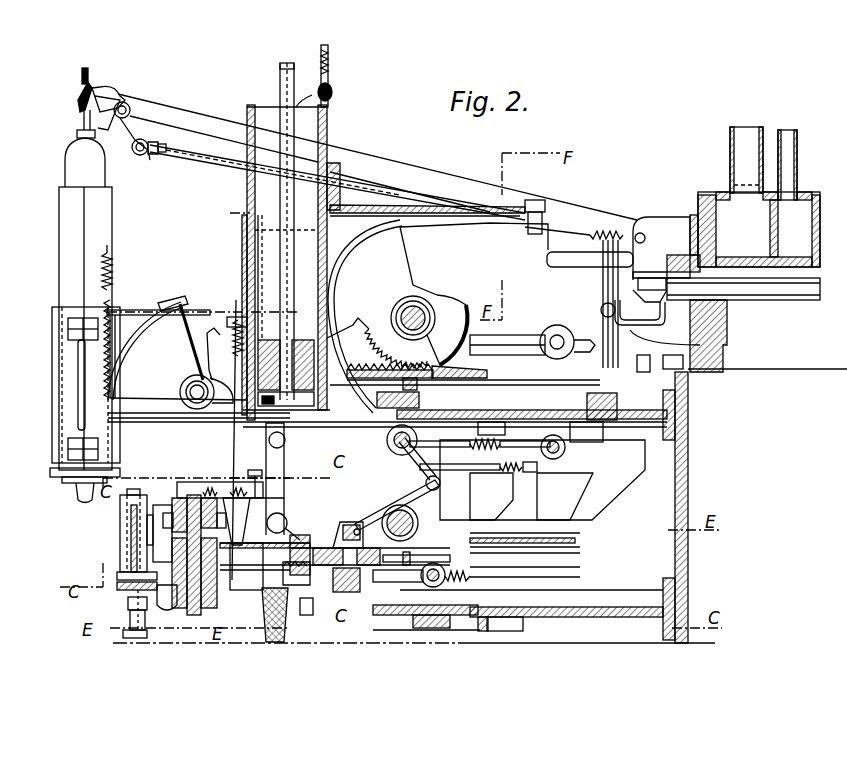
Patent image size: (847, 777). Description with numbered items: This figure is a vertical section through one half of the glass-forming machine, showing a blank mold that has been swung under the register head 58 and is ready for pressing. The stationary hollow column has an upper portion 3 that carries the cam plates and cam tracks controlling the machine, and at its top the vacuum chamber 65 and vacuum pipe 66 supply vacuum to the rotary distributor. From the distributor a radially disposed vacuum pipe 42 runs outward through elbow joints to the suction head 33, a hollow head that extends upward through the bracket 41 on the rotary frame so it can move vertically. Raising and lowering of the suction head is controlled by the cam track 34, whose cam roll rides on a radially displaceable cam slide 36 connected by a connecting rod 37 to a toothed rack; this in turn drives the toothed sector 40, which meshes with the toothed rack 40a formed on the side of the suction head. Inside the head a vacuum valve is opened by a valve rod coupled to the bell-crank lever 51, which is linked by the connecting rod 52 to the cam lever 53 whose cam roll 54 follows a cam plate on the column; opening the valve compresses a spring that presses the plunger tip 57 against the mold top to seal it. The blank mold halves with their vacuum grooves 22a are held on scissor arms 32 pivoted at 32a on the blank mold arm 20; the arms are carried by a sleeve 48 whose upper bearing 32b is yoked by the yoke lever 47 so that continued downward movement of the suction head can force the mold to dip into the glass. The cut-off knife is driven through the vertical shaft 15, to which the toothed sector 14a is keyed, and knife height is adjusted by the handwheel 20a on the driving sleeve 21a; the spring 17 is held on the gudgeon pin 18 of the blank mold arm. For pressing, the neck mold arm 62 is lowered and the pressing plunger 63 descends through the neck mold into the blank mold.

The upper portion of the central column 3 is at (689, 492).
The toothed sector 14a is at (120, 522).
The vertical shaft 15 is at (130, 622).
The spring 17 is at (220, 482).
The gudgeon pin 18 is at (258, 482).
The blank mold arm 20 is at (120, 545).
The handwheel 20a is at (125, 600).
The driving sleeve 21a is at (128, 556).
The vacuum grooves 22a is at (283, 612).
The scissor arms 32 is at (192, 495).
The pivot 32a is at (218, 497).
The upper bearing 32b is at (180, 475).
The suction head 33 is at (58, 477).
The cam track 34 is at (690, 400).
The cam slide 36 is at (565, 330).
The connecting rod 37 is at (530, 328).
The toothed sector 40 is at (180, 300).
The toothed rack 40a is at (113, 282).
The bracket 41 is at (52, 358).
The vacuum pipe 42 is at (195, 115).
The yoke lever 47 is at (165, 505).
The sleeve 48 is at (198, 480).
The bell-crank lever 51 is at (142, 158).
The connecting rod 52 is at (207, 165).
The cam lever 53 is at (602, 282).
The cam roll 54 is at (605, 388).
The plunger tip 57 is at (79, 500).
The register head 58 is at (340, 540).
The neck mold arm 62 is at (382, 623).
The pressing plunger 63 is at (268, 462).
The vacuum chamber 65 is at (743, 282).
The vacuum pipe 66 is at (730, 153).